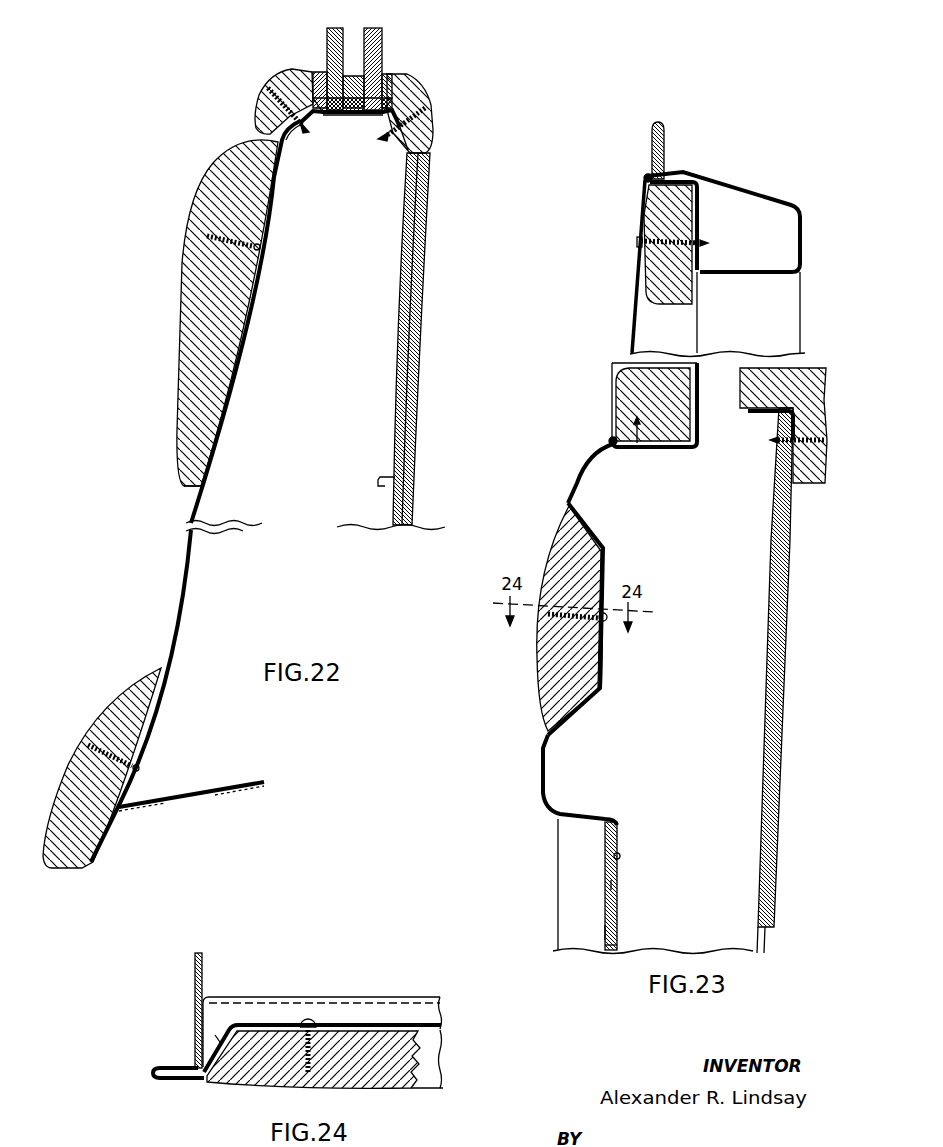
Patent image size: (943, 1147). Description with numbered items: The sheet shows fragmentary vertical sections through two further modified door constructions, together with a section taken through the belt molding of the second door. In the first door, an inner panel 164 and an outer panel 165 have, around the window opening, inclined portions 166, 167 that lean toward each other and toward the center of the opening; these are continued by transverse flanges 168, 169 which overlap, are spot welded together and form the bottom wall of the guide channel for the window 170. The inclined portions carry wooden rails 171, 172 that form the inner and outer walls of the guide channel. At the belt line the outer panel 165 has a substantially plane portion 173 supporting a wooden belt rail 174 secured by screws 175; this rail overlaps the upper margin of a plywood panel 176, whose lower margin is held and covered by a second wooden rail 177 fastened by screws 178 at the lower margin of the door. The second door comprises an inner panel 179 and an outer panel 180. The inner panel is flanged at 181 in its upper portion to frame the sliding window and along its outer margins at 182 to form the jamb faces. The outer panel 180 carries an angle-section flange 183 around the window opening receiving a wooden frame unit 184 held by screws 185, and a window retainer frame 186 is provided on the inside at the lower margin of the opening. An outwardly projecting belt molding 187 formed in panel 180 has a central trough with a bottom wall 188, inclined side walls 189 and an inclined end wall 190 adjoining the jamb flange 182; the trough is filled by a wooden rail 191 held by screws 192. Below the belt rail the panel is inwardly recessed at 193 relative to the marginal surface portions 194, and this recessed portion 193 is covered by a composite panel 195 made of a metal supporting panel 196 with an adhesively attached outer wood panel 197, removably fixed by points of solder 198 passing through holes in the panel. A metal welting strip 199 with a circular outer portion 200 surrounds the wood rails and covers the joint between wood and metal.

In FIG. 22, the inner panel 164 is at (397, 388).
In FIG. 22, the outer panel 165 is at (207, 484).
In FIG. 22, the inclined portion 166 is at (405, 135).
In FIG. 22, the inclined portion 167 is at (298, 128).
In FIG. 22, the transverse flange 168 is at (367, 116).
In FIG. 22, the transverse flange 169 is at (337, 116).
In FIG. 22, the window 170 is at (372, 31).
In FIG. 22, the wooden rail 171 is at (418, 98).
In FIG. 22, the wooden rail 172 is at (293, 80).
In FIG. 22, the plane portion 173 is at (236, 333).
In FIG. 22, the wooden belt rail 174 is at (193, 273).
In FIG. 22, the screws 175 is at (258, 246).
In FIG. 22, the panel 176 is at (182, 580).
In FIG. 22, the second wooden rail 177 is at (110, 710).
In FIG. 22, the screws 178 is at (141, 765).
In FIG. 23, the inner panel 179 is at (762, 730).
In FIG. 23, the outer panel 180 is at (622, 819).
In FIG. 23, the flange 181 is at (733, 270).
In FIG. 23, the flange 182 is at (779, 200).
In FIG. 24, the flange 182 is at (195, 1041).
In FIG. 23, the angle-section flange 183 is at (691, 181).
In FIG. 23, the wooden frame unit 184 is at (650, 262).
In FIG. 23, the screws 185 is at (640, 242).
In FIG. 23, the window retainer frame 186 is at (804, 362).
In FIG. 23, the belt molding 187 is at (579, 488).
In FIG. 23, the bottom wall 188 is at (599, 677).
In FIG. 24, the bottom wall 188 is at (442, 1027).
In FIG. 23, the inclined side walls 189 is at (592, 531).
In FIG. 24, the inclined side walls 189 is at (440, 1082).
In FIG. 24, the inclined end wall 190 is at (218, 1040).
In FIG. 23, the wooden rail 191 is at (548, 697).
In FIG. 24, the wooden rail 191 is at (393, 1088).
In FIG. 23, the screws 192 is at (606, 624).
In FIG. 24, the screws 192 is at (314, 1022).
In FIG. 23, the recessed portion 193 is at (618, 915).
In FIG. 24, the recessed portion 193 is at (404, 998).
In FIG. 23, the marginal surface portions 194 is at (557, 868).
In FIG. 24, the marginal surface portions 194 is at (181, 1079).
In FIG. 23, the composite panel 195 is at (596, 932).
In FIG. 23, the metal supporting panel 196 is at (614, 885).
In FIG. 23, the outer wood panel 197 is at (603, 947).
In FIG. 23, the points of solder 198 is at (619, 855).
In FIG. 23, the metal welting strip 199 is at (646, 170).
In FIG. 23, the circular cross sectional outer portion 200 is at (645, 181).